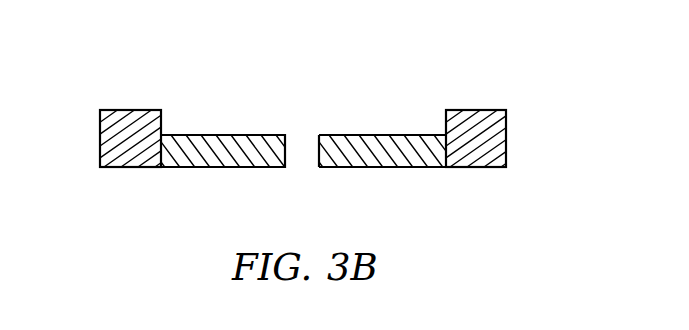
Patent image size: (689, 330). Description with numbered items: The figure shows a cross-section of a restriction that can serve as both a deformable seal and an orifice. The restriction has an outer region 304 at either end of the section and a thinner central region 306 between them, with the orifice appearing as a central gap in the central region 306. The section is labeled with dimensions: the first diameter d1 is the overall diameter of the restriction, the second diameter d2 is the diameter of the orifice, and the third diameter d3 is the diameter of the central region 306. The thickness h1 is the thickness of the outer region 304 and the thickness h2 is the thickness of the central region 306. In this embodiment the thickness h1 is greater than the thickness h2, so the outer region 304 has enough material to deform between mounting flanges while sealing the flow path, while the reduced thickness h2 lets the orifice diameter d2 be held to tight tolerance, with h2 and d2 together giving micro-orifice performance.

The outer region 304 is at (478, 110).
The central region 306 is at (375, 135).
The first diameter d1 is at (506, 207).
The second diameter d2 is at (302, 142).
The third diameter d3 is at (446, 105).
The thickness of the outer region h1 is at (75, 83).
The thickness of the central region h2 is at (195, 110).